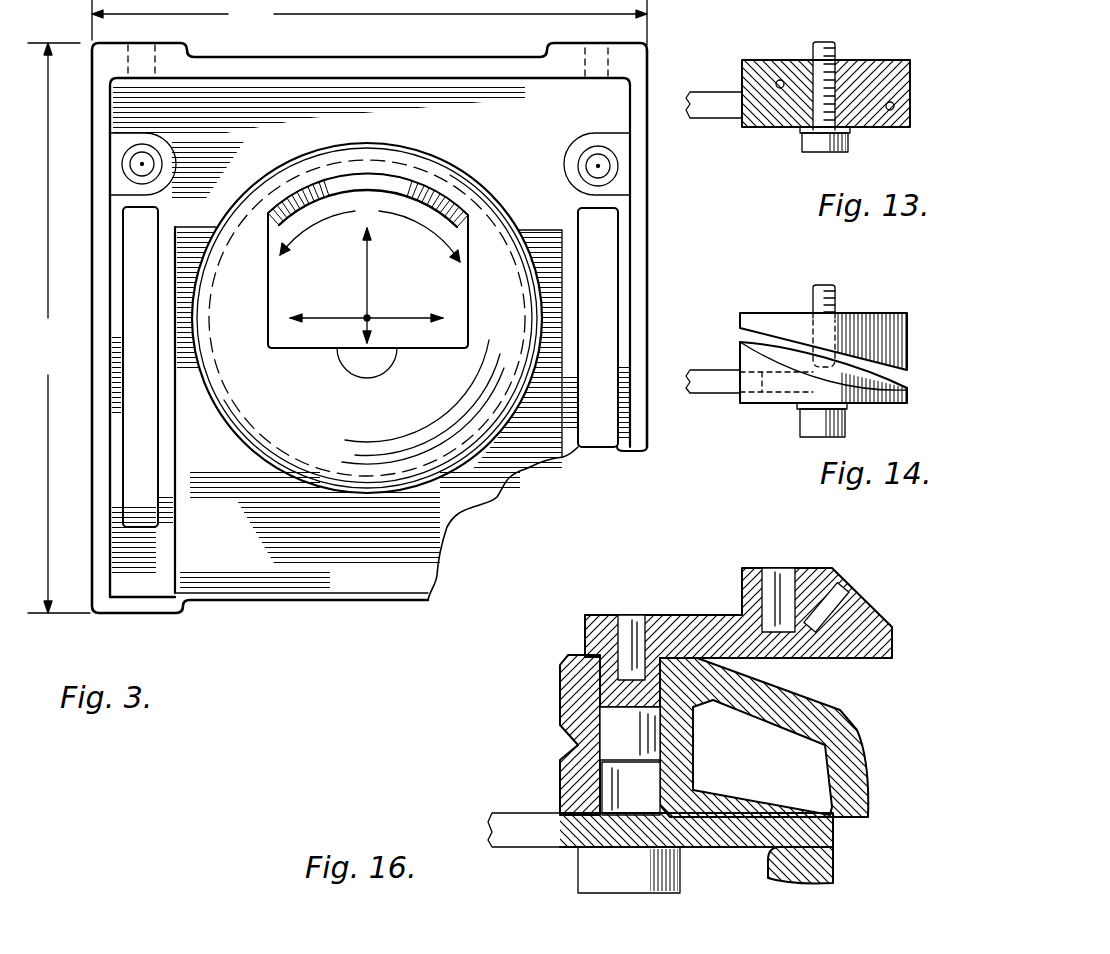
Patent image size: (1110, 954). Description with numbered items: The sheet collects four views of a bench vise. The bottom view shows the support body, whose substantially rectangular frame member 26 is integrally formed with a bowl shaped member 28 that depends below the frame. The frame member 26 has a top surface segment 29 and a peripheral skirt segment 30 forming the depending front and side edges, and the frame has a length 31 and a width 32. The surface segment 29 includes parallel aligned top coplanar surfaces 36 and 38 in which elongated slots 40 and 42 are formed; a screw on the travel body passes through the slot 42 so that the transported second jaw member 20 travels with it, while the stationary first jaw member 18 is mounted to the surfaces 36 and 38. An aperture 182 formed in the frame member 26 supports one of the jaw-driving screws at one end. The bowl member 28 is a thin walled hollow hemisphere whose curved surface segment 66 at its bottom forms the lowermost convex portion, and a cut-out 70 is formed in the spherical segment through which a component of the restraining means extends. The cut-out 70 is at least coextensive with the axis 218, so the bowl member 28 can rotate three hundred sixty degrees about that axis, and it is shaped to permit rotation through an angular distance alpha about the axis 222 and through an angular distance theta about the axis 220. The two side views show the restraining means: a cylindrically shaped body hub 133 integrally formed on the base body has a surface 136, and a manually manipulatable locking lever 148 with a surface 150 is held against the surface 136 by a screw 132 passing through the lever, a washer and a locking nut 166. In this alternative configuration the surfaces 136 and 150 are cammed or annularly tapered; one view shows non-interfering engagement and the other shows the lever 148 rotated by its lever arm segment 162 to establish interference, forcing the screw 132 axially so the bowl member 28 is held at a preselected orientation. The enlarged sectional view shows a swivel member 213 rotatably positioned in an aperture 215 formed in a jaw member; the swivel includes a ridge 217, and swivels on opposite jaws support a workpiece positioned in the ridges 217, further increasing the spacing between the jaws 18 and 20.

In FIG. 3, the frame member 26 is at (312, 612).
In FIG. 16, the frame member 26 is at (836, 870).
In FIG. 3, the bowl shaped member 28 is at (480, 196).
In FIG. 3, the top surface segment 29 is at (485, 96).
In FIG. 3, the peripheral skirt segment 30 is at (649, 243).
In FIG. 3, the length 31 is at (59, 328).
In FIG. 3, the width 32 is at (369, 22).
In FIG. 3, the top coplanar surface 36 is at (575, 452).
In FIG. 3, the top coplanar surface 38 is at (162, 565).
In FIG. 3, the elongated slot 40 is at (579, 398).
In FIG. 3, the elongated slot 42 is at (122, 476).
In FIG. 3, the curved surface segment 66 is at (322, 355).
In FIG. 3, the cut-out 70 is at (274, 289).
In FIG. 3, the aperture 182 is at (146, 56).
In FIG. 3, the first workpiece gripping jaw member 18 is at (590, 51).
In FIG. 3, the axis 218 is at (369, 317).
In FIG. 3, the axis 220 is at (370, 253).
In FIG. 3, the axis 222 is at (398, 317).
In FIG. 13, the screw 132 is at (832, 46).
In FIG. 14, the screw 132 is at (836, 291).
In FIG. 13, the body hub 133 is at (912, 80).
In FIG. 13, the surface 136 is at (776, 85).
In FIG. 14, the surface 136 is at (742, 330).
In FIG. 13, the locking lever 148 is at (770, 122).
In FIG. 14, the locking lever 148 is at (775, 405).
In FIG. 13, the surface 150 is at (881, 112).
In FIG. 14, the surface 150 is at (882, 377).
In FIG. 13, the lever arm segment 162 is at (716, 108).
In FIG. 14, the lever arm segment 162 is at (708, 388).
In FIG. 13, the locking nut 166 is at (848, 152).
In FIG. 14, the locking nut 166 is at (848, 425).
In FIG. 16, the second workpiece gripping jaw member 20 is at (850, 716).
In FIG. 16, the swivel member 213 is at (865, 596).
In FIG. 16, the aperture 215 is at (662, 775).
In FIG. 16, the ridge 217 is at (740, 595).